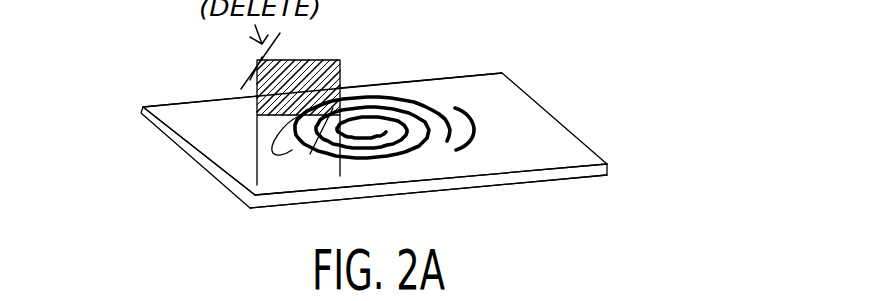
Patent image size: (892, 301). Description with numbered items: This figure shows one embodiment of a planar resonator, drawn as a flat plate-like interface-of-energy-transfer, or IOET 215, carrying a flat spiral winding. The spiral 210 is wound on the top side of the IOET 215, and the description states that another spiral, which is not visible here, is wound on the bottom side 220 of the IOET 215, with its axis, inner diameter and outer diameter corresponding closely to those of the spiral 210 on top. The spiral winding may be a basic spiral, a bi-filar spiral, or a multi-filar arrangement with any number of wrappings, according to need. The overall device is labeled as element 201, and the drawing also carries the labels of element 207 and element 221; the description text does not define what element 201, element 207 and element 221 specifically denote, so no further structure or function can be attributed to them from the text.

The sensor assembly 201 is at (95, 185).
The spiral inductor coil 207 is at (462, 120).
The spiral 210 is at (447, 130).
The interface-of-energy-transfer (IOET) 215 is at (187, 108).
The bottom side 220 is at (345, 200).
The substrate bottom layer 221 is at (393, 196).